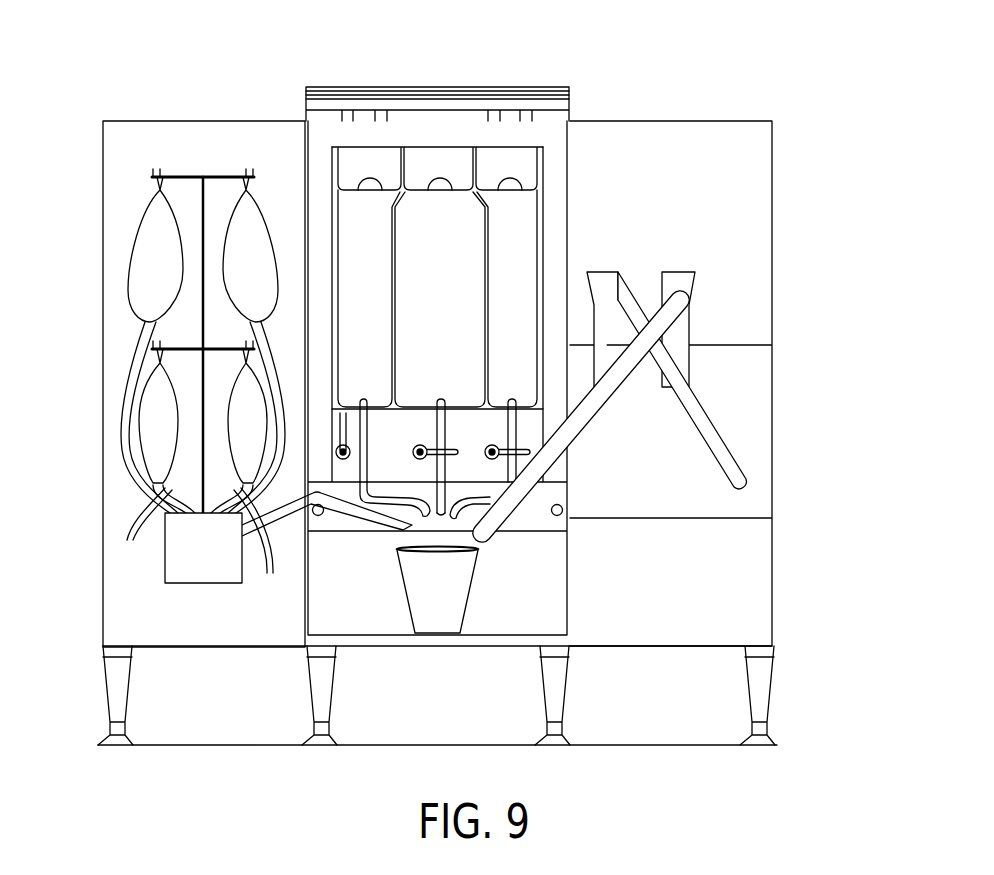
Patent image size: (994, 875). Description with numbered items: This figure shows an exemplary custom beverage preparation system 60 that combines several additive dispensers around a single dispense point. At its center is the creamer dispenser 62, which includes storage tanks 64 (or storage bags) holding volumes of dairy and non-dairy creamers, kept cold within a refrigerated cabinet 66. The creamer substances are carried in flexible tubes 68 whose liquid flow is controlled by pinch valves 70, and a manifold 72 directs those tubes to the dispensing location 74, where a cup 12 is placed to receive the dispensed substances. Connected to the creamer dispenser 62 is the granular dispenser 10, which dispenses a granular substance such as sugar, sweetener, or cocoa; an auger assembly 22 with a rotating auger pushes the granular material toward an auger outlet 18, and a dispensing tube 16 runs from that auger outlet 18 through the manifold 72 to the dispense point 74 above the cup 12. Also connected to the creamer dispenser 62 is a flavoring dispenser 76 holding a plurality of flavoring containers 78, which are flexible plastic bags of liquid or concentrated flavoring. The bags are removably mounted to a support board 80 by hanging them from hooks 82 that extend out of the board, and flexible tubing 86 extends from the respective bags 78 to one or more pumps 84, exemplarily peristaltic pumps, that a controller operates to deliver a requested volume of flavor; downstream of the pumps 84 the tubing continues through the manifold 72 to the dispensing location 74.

The granular dispenser 10 is at (803, 244).
The cup 12 is at (448, 590).
The dispensing tube 16 is at (585, 415).
The auger outlet 18 is at (685, 282).
The auger assembly 22 is at (708, 430).
The custom beverage preparation system 60 is at (566, 55).
The creamer dispenser 62 is at (489, 83).
The storage tanks 64 is at (481, 190).
The refrigerated cabinet 66 is at (348, 91).
The flexible tubes 68 is at (437, 474).
The pinch valves 70 is at (343, 417).
The manifold 72 is at (537, 508).
The dispensing location 74 is at (381, 567).
The flavoring dispenser 76 is at (148, 121).
The flavoring containers 78 is at (203, 330).
The support board 80 is at (200, 194).
The hooks 82 is at (158, 171).
The pumps 84 is at (203, 548).
The flexible tubing 86 is at (280, 378).